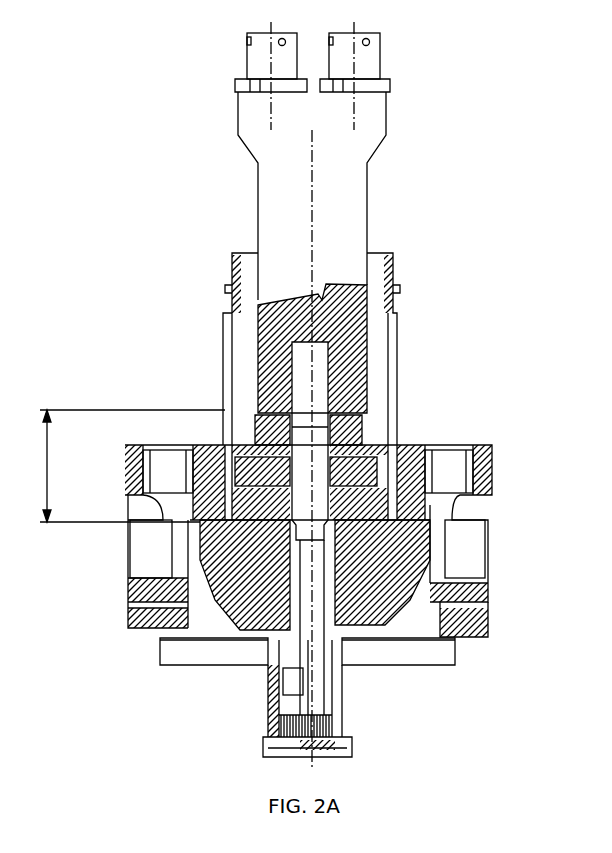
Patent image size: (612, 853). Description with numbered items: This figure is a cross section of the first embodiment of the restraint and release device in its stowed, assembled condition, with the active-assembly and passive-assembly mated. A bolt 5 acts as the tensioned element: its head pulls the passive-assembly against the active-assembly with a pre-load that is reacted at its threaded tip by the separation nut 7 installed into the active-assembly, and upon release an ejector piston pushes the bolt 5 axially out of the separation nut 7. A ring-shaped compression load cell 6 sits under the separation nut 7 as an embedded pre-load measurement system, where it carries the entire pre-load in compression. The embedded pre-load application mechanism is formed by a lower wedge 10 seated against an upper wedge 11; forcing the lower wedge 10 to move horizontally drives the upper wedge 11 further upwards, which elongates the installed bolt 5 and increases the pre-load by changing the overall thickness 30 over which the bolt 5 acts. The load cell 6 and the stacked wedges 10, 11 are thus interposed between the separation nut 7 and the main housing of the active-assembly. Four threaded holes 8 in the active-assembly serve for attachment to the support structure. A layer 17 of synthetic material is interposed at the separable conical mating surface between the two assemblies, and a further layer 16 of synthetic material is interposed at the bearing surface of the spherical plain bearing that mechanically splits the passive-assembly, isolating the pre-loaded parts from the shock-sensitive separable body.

The bolt 5 is at (318, 377).
The compression load cell 6 is at (360, 428).
The separation nut 7 is at (337, 208).
The threaded hole 8 is at (160, 460).
The lower wedge 10 is at (358, 478).
The upper wedge 11 is at (247, 462).
The layer of synthetic material 16 is at (377, 600).
The layer of synthetic material 17 is at (422, 555).
The overall thickness 30 is at (118, 466).